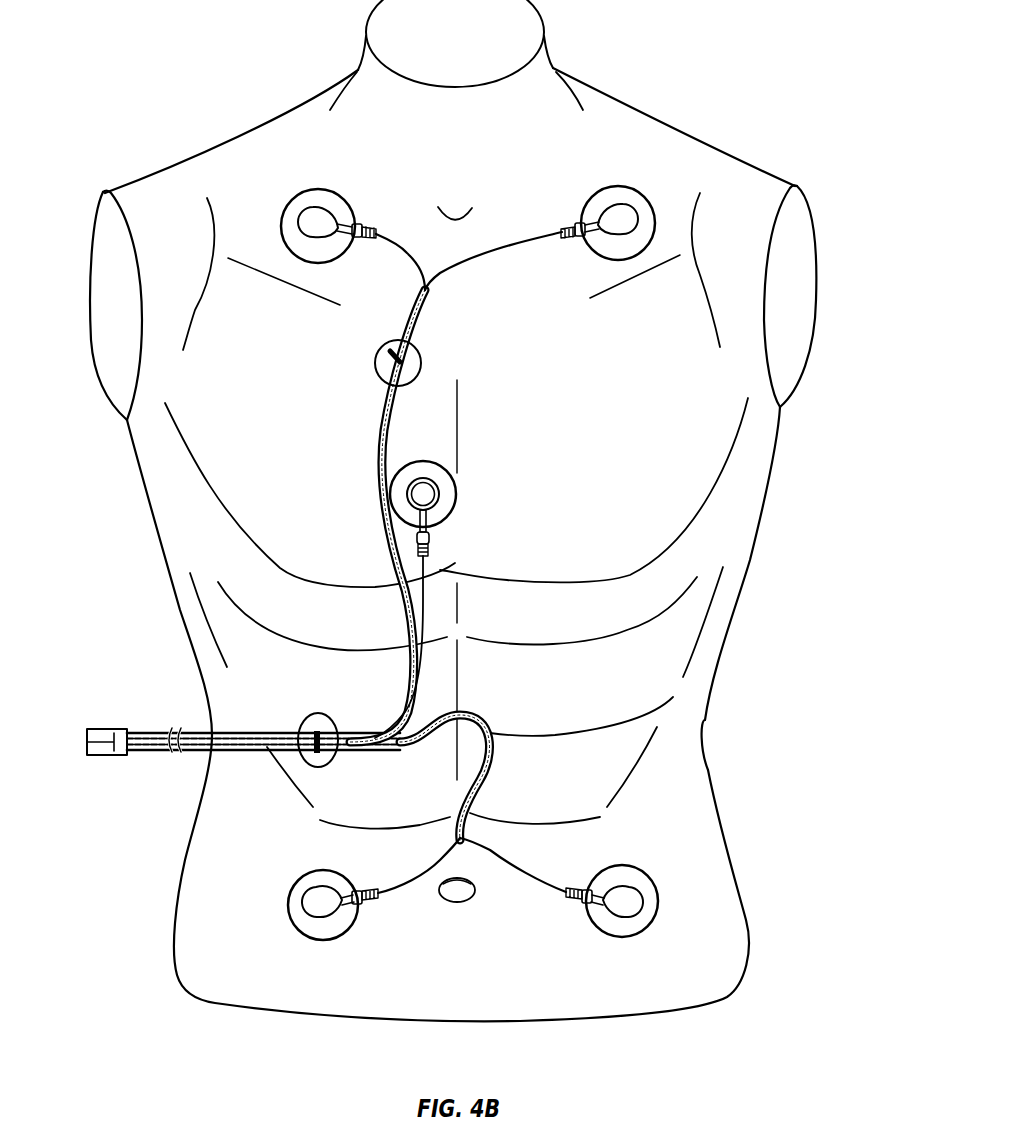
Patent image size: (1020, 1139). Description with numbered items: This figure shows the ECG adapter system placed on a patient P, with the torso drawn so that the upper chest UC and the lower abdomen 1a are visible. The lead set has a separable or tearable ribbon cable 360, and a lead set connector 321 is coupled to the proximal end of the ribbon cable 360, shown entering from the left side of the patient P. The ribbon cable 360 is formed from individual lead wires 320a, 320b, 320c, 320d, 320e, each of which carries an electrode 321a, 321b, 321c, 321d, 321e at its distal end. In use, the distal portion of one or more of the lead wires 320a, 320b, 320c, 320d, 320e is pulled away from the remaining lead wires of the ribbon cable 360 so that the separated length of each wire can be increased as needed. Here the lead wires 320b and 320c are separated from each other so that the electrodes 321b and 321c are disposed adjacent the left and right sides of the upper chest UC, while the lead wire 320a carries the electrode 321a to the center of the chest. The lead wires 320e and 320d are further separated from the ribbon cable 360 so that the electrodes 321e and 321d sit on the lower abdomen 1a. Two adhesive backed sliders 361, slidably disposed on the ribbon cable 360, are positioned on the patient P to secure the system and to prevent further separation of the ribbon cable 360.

The patient P is at (642, 134).
The upper chest UC is at (437, 180).
The lower abdomen 1a is at (383, 992).
The lead set connector 321 is at (107, 727).
The electrode 321a is at (452, 497).
The electrode 321b is at (315, 200).
The electrode 321c is at (625, 197).
The electrode 321d is at (627, 927).
The electrode 321e is at (320, 930).
The lead wire 320a is at (438, 575).
The lead wire 320b is at (403, 253).
The lead wire 320c is at (507, 253).
The lead wire 320d is at (515, 865).
The lead wire 320e is at (420, 873).
The ribbon cable 360 is at (226, 752).
The adhesive backed slider 361 is at (380, 360).